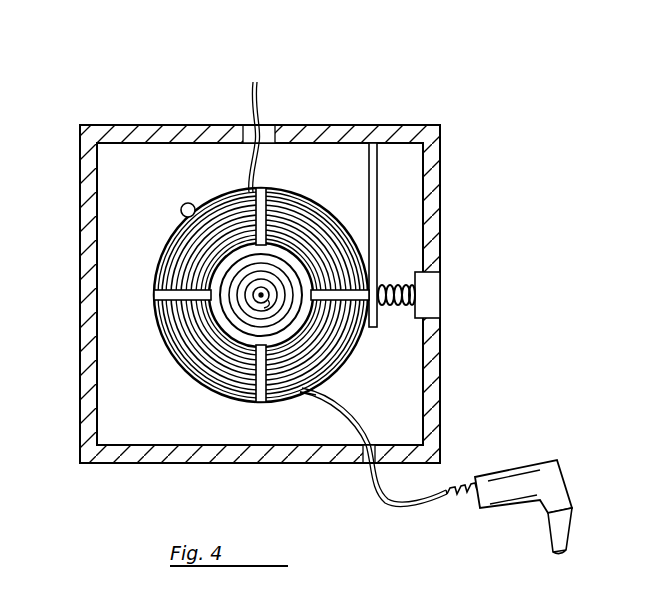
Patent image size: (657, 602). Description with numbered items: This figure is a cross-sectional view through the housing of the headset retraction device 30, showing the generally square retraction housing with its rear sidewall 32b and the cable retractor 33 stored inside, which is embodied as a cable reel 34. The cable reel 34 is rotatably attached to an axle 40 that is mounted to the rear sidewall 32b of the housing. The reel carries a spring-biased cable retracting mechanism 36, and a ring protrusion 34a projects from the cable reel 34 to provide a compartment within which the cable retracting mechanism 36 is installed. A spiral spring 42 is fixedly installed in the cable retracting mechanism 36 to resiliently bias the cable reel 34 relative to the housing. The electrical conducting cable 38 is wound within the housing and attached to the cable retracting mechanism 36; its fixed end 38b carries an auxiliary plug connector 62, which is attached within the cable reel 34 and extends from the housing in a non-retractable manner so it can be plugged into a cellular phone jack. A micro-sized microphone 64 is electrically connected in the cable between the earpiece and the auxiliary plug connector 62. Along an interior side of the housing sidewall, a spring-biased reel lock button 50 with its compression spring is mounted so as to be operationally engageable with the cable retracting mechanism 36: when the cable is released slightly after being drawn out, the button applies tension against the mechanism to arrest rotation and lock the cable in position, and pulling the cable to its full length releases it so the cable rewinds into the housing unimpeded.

The headset retraction device 30 is at (410, 96).
The rear sidewall 32b is at (154, 255).
The cable retractor 33 is at (403, 233).
The cable reel 34 is at (172, 362).
The ring protrusion 34a is at (190, 287).
The cable retracting mechanism 36 is at (222, 343).
The electrical conducting cable 38 is at (262, 100).
The fixed end 38b is at (300, 397).
The axle 40 is at (280, 304).
The spiral spring 42 is at (215, 308).
The spring-biased reel lock button 50 is at (440, 296).
The auxiliary plug connector 62 is at (567, 478).
The micro-sized microphone 64 is at (186, 204).